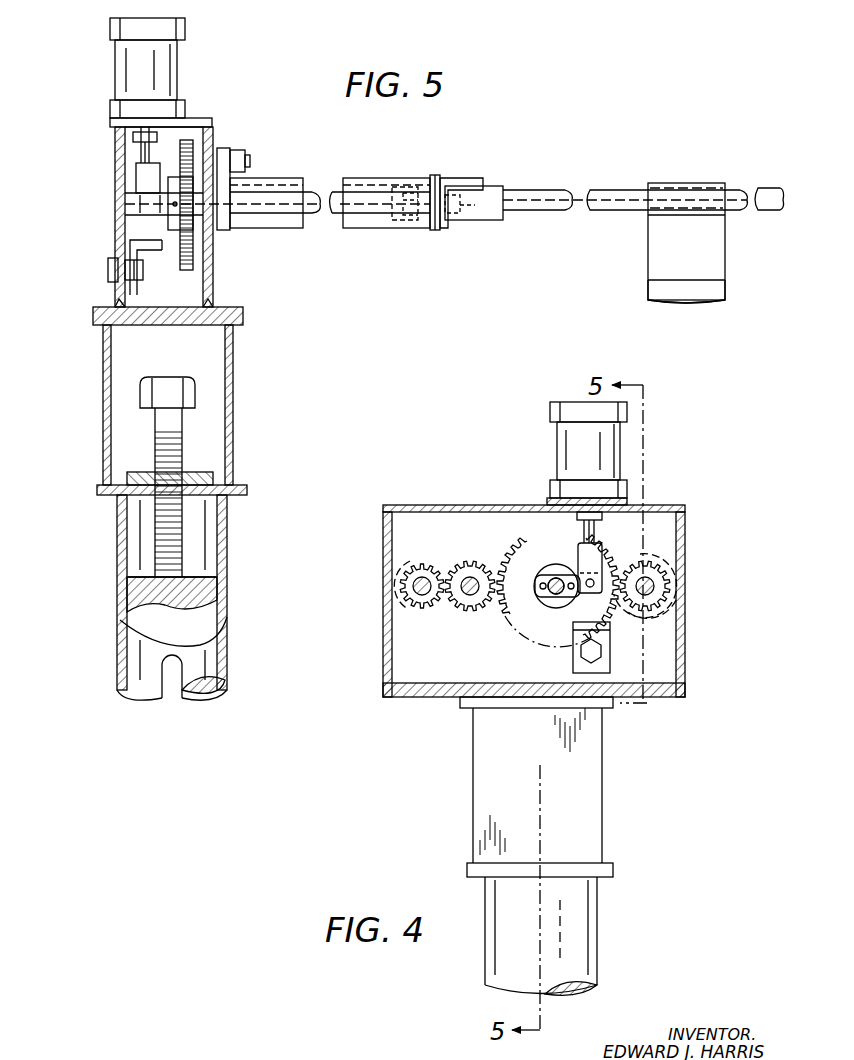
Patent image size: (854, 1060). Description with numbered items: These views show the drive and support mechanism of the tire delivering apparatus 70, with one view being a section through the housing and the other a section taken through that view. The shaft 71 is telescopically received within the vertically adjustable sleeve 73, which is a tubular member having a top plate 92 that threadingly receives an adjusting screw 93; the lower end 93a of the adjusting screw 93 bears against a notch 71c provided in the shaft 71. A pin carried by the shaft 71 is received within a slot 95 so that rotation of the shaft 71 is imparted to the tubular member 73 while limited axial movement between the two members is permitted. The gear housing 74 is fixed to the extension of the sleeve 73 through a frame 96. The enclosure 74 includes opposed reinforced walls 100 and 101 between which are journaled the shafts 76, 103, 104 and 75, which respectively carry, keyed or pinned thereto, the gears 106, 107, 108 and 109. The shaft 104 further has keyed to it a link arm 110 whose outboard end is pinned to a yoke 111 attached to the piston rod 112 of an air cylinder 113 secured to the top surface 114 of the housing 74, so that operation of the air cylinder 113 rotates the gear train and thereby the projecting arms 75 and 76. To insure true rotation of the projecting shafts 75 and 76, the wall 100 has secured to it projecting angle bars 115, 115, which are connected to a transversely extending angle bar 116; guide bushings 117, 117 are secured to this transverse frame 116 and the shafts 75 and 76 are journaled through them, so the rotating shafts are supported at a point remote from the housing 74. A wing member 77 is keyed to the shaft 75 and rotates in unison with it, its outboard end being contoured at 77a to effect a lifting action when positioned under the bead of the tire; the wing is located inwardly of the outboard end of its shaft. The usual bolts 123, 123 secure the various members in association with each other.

In FIG. 5, the tire delivering apparatus 70 is at (255, 545).
In FIG. 5, the shaft 71 is at (128, 620).
In FIG. 4, the shaft 71 is at (568, 996).
In FIG. 5, the notch 71c is at (217, 580).
In FIG. 5, the sleeve 73 is at (228, 642).
In FIG. 4, the sleeve 73 is at (597, 935).
In FIG. 5, the gear housing 74 is at (112, 285).
In FIG. 4, the gear housing 74 is at (688, 656).
In FIG. 5, the arm 75 is at (125, 203).
In FIG. 4, the arm 75 is at (654, 586).
In FIG. 4, the arm 76 is at (422, 596).
In FIG. 5, the wing member 77 is at (725, 258).
In FIG. 5, the contoured outboard end 77a is at (725, 291).
In FIG. 5, the top plate 92 is at (247, 490).
In FIG. 4, the top plate 92 is at (467, 868).
In FIG. 5, the adjusting screw 93 is at (182, 432).
In FIG. 5, the lower end of adjusting screw 93a is at (130, 577).
In FIG. 5, the slot 95 is at (165, 690).
In FIG. 5, the frame 96 is at (103, 375).
In FIG. 4, the frame 96 is at (473, 750).
In FIG. 5, the reinforced wall 100 is at (210, 258).
In FIG. 4, the reinforced wall 100 is at (392, 665).
In FIG. 5, the reinforced wall 101 is at (125, 245).
In FIG. 4, the shaft 103 is at (470, 597).
In FIG. 4, the shaft 104 is at (548, 596).
In FIG. 4, the gear 106 is at (428, 565).
In FIG. 4, the gear 107 is at (470, 562).
In FIG. 5, the gear 108 is at (184, 265).
In FIG. 4, the gear 108 is at (518, 548).
In FIG. 5, the gear 109 is at (172, 222).
In FIG. 4, the gear 109 is at (640, 560).
In FIG. 4, the link arm 110 is at (568, 598).
In FIG. 5, the yoke 111 is at (136, 180).
In FIG. 4, the yoke 111 is at (578, 553).
In FIG. 5, the piston rod 112 is at (141, 145).
In FIG. 4, the piston rod 112 is at (584, 530).
In FIG. 5, the air cylinder 113 is at (110, 48).
In FIG. 4, the air cylinder 113 is at (557, 440).
In FIG. 4, the top surface of housing 114 is at (492, 478).
In FIG. 5, the angle bar 115 is at (248, 228).
In FIG. 5, the transversely extending angle bar 116 is at (468, 152).
In FIG. 5, the guide bushing 117 is at (495, 220).
In FIG. 5, the bolt 123 is at (232, 148).